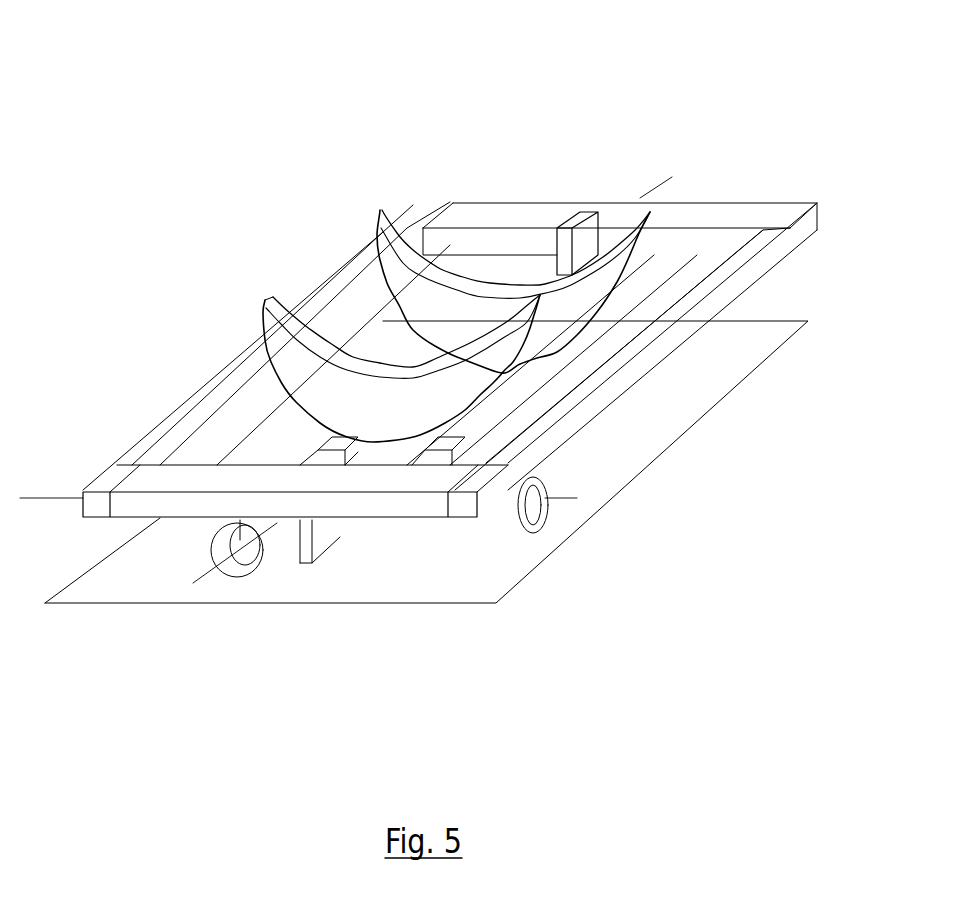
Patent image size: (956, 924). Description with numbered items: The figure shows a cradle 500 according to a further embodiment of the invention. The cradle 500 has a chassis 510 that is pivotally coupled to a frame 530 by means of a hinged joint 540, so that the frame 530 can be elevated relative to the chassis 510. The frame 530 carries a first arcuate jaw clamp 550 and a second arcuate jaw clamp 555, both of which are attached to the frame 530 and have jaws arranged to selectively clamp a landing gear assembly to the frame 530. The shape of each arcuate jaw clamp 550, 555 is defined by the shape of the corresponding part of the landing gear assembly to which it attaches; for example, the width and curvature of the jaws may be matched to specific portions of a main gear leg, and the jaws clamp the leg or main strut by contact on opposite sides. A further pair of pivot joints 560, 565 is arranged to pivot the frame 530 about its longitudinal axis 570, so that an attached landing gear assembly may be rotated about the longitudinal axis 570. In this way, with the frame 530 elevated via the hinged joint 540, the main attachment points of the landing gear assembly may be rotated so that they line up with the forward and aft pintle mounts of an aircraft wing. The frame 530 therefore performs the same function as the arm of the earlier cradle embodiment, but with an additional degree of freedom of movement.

The cradle 500 is at (618, 153).
The chassis 510 is at (637, 428).
The frame 530 is at (688, 208).
The hinged joint 540 is at (492, 505).
The first arcuate jaw clamp 550 is at (378, 208).
The second arcuate jaw clamp 555 is at (270, 297).
The pivot joint 560 is at (563, 265).
The pivot joint 565 is at (284, 503).
The longitudinal axis 570 is at (216, 562).